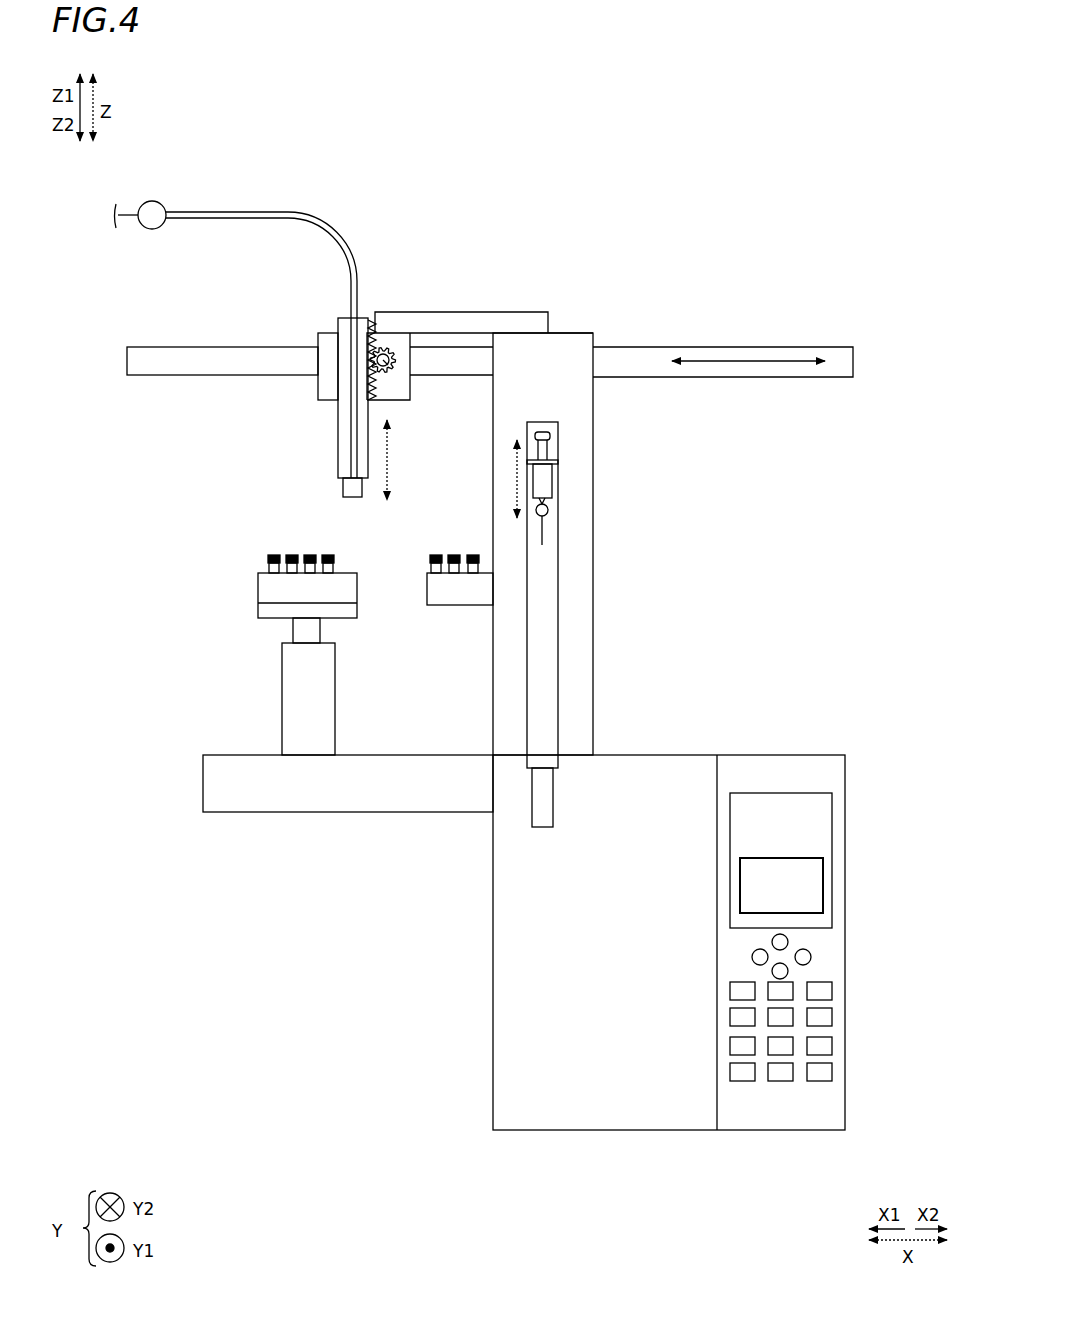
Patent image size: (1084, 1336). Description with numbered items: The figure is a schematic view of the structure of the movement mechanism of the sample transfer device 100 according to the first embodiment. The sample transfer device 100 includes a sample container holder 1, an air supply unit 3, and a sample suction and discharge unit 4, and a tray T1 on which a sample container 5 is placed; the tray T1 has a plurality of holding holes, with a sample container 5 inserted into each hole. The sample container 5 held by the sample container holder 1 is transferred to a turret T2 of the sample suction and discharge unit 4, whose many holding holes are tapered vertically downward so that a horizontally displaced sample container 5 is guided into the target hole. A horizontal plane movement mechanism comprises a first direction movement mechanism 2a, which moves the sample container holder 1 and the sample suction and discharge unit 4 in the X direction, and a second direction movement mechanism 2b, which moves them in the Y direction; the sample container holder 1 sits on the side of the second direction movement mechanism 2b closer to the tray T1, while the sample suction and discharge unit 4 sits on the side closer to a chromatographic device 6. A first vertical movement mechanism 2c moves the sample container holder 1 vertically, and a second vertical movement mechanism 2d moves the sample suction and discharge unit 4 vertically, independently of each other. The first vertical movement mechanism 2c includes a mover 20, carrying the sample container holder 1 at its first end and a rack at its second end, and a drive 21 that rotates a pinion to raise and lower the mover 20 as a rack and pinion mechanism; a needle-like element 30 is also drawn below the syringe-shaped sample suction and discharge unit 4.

The sample transfer device 100 is at (647, 251).
The sample container holder 1 is at (339, 491).
The first direction movement mechanism 2a is at (810, 330).
The second direction movement mechanism 2b is at (463, 302).
The first vertical movement mechanism 2c is at (311, 392).
The second vertical movement mechanism 2d is at (610, 459).
The air supply unit 3 is at (156, 201).
The sample suction and discharge unit 4 is at (552, 480).
The sample container 5 is at (275, 562).
The chromatographic device 6 is at (653, 737).
The mover 20 is at (338, 437).
The drive 21 is at (393, 374).
The needle 30 is at (545, 533).
The tray T1 is at (255, 582).
The turret T2 is at (427, 589).